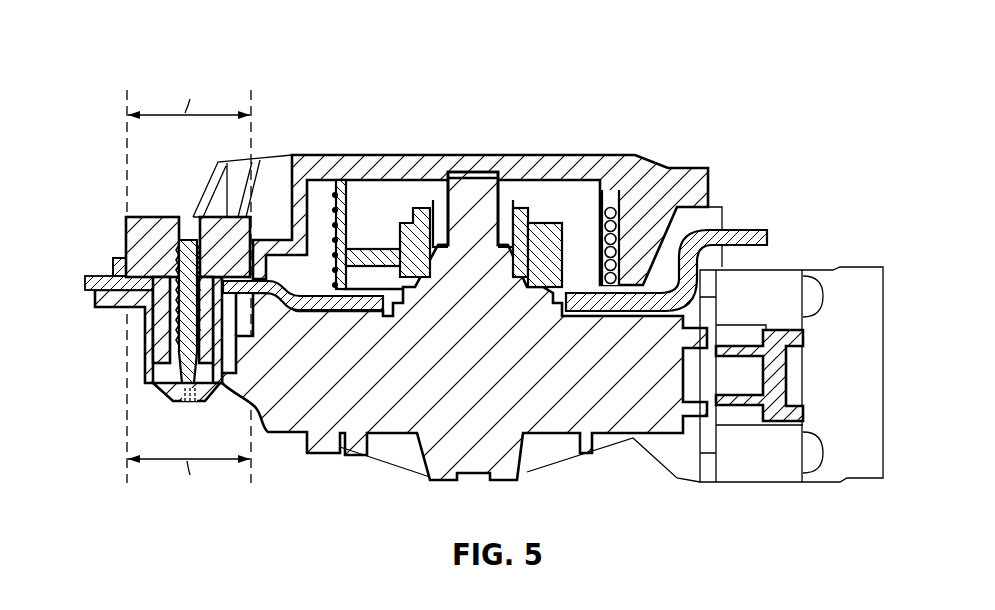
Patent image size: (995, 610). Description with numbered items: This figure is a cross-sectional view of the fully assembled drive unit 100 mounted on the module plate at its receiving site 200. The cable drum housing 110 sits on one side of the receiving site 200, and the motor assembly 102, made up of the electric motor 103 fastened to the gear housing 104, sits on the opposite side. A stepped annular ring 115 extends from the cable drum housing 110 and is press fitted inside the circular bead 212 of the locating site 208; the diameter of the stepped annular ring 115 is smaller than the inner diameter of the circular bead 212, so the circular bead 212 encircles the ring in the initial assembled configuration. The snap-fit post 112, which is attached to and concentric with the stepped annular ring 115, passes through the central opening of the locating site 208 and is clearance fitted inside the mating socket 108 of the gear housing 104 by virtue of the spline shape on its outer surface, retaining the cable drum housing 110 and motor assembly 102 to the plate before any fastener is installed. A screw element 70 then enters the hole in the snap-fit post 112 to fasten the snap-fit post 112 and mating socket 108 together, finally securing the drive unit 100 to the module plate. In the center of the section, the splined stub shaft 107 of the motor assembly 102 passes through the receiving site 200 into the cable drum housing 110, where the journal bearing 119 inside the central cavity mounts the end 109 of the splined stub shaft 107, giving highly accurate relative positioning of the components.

The drive unit 100 is at (268, 76).
The motor assembly 102 is at (560, 470).
The electric motor 103 is at (760, 484).
The gear housing 104 is at (385, 460).
The splined stub shaft 107 is at (533, 207).
The mating socket 108 is at (150, 352).
The end of the splined stub shaft 109 is at (478, 178).
The cable drum housing 110 is at (360, 167).
The snap-fit post 112 is at (170, 320).
The stepped annular ring 115 is at (85, 290).
The journal bearing 119 is at (471, 186).
The receiving site 200 is at (748, 219).
The locating site 208 is at (113, 243).
The circular bead 212 is at (112, 263).
The screw element 70 is at (168, 383).